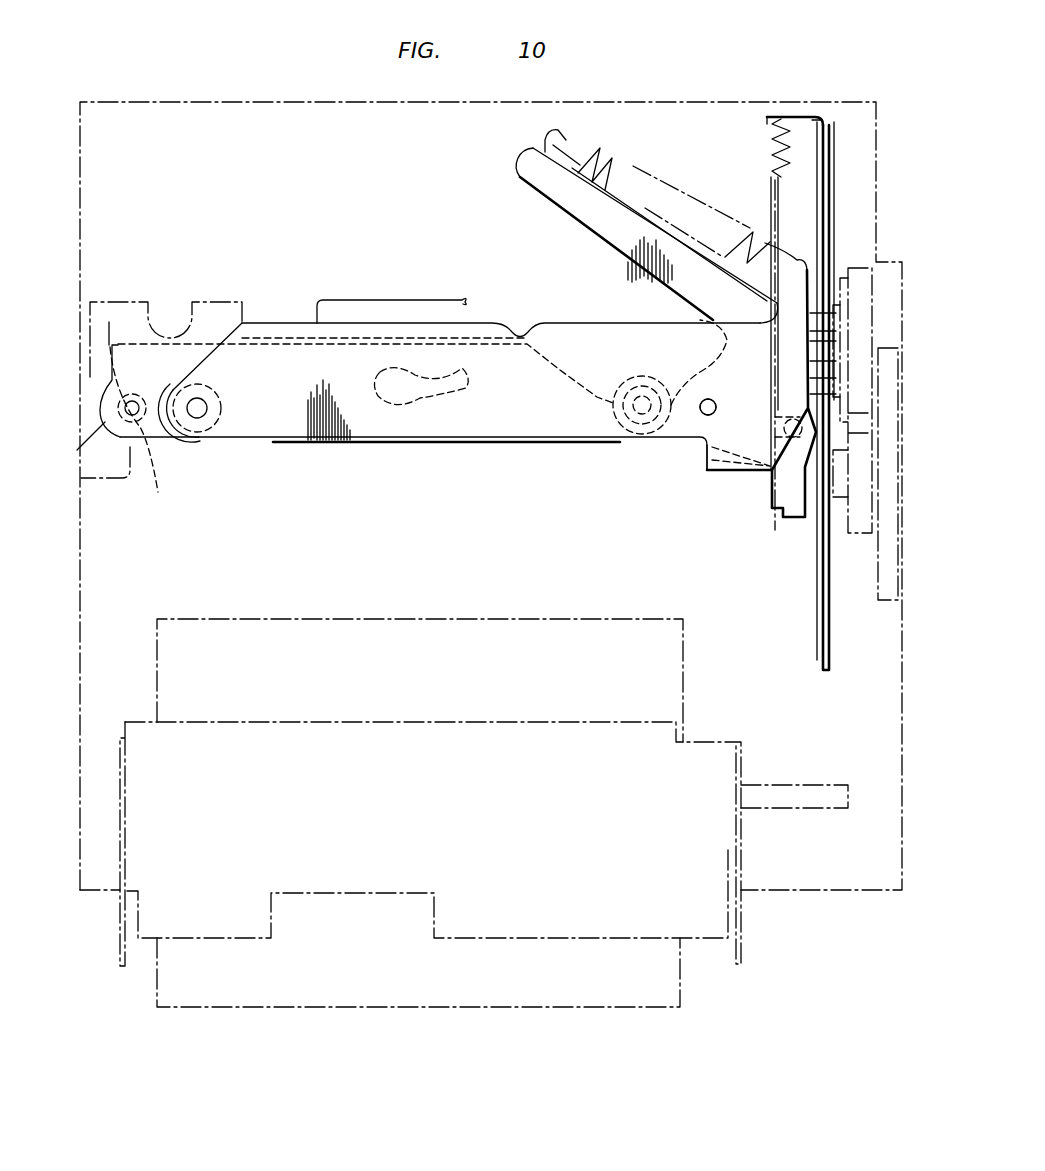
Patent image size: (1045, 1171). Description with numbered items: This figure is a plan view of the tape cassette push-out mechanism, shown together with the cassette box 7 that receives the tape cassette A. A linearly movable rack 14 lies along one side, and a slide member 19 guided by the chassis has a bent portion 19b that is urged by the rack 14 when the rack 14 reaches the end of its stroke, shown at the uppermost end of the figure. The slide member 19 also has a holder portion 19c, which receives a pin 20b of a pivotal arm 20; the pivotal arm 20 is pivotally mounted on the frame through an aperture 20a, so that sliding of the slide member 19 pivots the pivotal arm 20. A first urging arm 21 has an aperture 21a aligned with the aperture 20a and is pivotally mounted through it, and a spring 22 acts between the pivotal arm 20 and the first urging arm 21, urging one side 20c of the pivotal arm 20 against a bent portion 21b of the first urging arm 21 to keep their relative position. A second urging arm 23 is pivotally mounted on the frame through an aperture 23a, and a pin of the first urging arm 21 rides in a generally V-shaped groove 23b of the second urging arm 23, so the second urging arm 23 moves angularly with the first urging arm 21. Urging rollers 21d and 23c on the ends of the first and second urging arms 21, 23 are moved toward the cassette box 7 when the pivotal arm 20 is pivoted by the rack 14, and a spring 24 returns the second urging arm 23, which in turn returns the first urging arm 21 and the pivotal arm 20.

The cassette box 7 is at (690, 757).
The rack 14 is at (790, 150).
The slide member 19 is at (820, 165).
The bent portion 19b is at (790, 116).
The holder portion 19c is at (782, 468).
The pivotal arm 20 is at (588, 222).
The aperture 20a is at (708, 407).
The pin 20b is at (797, 470).
The one side 20c is at (700, 468).
The first urging arm 21 is at (387, 340).
The aperture 21a is at (705, 414).
The bent portion 21b is at (722, 485).
The urging roller 21d is at (193, 442).
The spring 22 is at (612, 163).
The second urging arm 23 is at (170, 338).
The aperture 23a is at (145, 434).
The V-shaped groove 23b is at (435, 413).
The urging roller 23c is at (637, 377).
The spring 24 is at (100, 432).
The tape cassette A is at (520, 635).